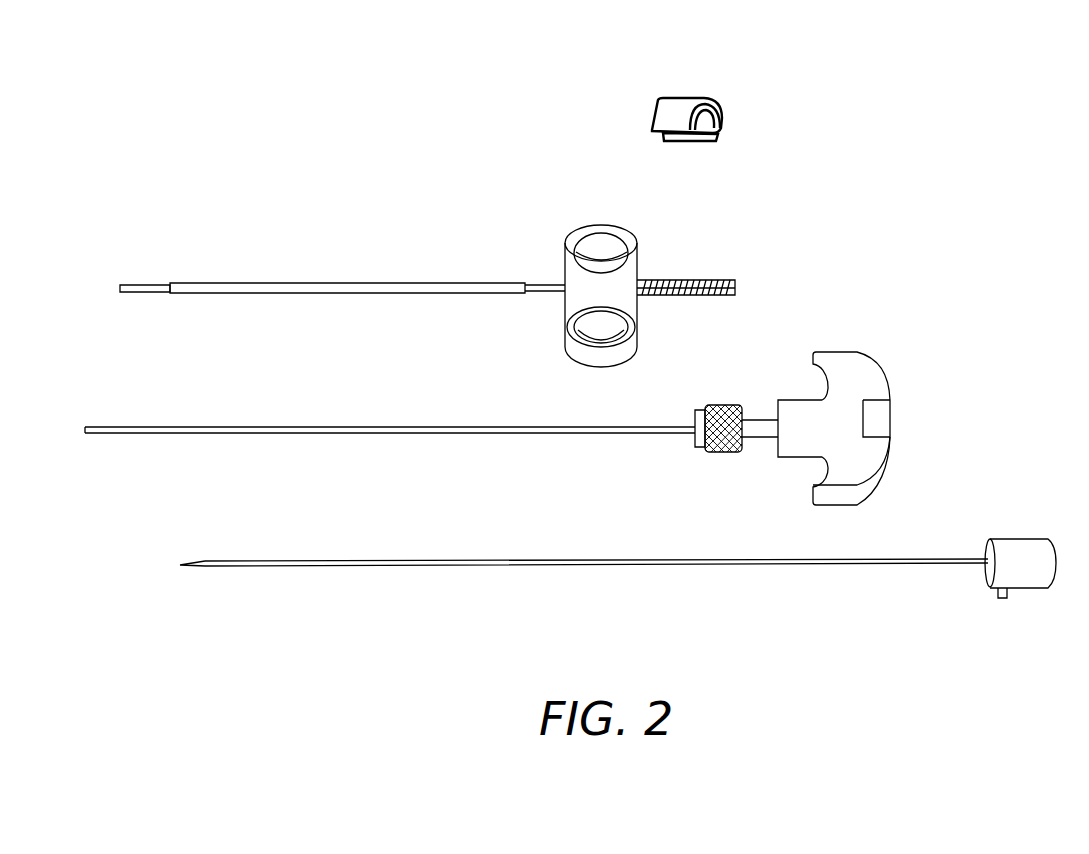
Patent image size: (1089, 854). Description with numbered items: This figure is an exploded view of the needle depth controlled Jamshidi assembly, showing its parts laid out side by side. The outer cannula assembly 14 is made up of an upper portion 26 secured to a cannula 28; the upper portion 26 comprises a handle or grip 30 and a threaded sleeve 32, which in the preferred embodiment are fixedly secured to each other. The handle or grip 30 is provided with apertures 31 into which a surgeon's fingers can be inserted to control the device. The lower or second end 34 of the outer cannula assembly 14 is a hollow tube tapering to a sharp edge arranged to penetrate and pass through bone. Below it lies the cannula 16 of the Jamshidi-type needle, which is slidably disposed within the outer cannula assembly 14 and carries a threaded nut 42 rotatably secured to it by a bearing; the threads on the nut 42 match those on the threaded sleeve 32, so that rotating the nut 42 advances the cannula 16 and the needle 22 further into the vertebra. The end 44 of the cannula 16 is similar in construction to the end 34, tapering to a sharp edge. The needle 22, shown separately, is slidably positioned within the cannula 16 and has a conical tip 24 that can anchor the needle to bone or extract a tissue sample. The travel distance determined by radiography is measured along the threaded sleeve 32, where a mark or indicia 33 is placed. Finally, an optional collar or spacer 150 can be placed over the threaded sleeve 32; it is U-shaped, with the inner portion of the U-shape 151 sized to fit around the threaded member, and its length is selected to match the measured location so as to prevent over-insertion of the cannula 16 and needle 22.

The outer cannula assembly 14 is at (400, 290).
The cannula 16 is at (250, 427).
The needle 22 is at (692, 566).
The conical tip 24 is at (182, 566).
The upper portion 26 is at (638, 267).
The cannula 28 is at (260, 283).
The handle or grip 30 is at (565, 240).
The apertures 31 is at (596, 318).
The threaded sleeve 32 is at (733, 281).
The mark or indicia 33 is at (675, 282).
The lower end 34 is at (118, 285).
The threaded nut 42 is at (712, 406).
The end 44 is at (85, 428).
The collar or spacer 150 is at (673, 108).
The inner portion of the U-shape 151 is at (715, 108).